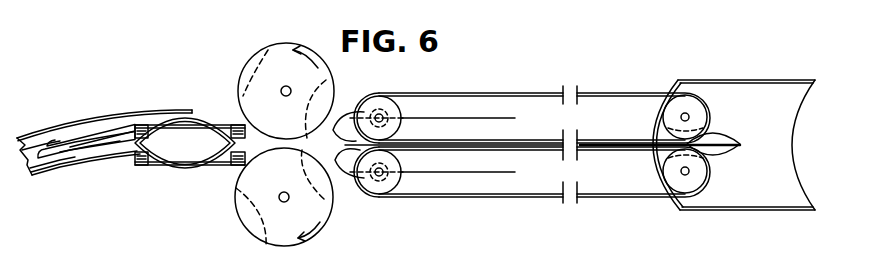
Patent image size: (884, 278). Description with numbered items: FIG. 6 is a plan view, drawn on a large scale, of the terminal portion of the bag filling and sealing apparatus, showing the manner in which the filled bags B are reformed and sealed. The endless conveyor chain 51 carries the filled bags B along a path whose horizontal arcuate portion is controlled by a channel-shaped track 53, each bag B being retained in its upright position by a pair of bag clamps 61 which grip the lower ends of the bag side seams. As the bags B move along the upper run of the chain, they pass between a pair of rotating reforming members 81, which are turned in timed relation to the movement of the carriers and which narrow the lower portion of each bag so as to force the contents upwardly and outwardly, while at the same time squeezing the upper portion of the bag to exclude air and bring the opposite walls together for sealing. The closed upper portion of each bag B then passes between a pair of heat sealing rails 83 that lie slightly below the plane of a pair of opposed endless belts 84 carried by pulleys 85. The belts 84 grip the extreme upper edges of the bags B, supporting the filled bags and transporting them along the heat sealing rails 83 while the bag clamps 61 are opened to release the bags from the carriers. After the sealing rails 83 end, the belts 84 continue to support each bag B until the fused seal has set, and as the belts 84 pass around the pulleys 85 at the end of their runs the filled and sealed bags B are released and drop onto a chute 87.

The endless conveyor chain 51 is at (92, 155).
The channel-shaped track 53 is at (77, 122).
The bag clamp 61 is at (218, 122).
The reforming member 81 is at (278, 44).
The heat sealing rail 83 is at (513, 123).
The endless belt 84 is at (597, 92).
The pulley 85 is at (378, 97).
The chute 87 is at (768, 212).
The bag B is at (182, 176).